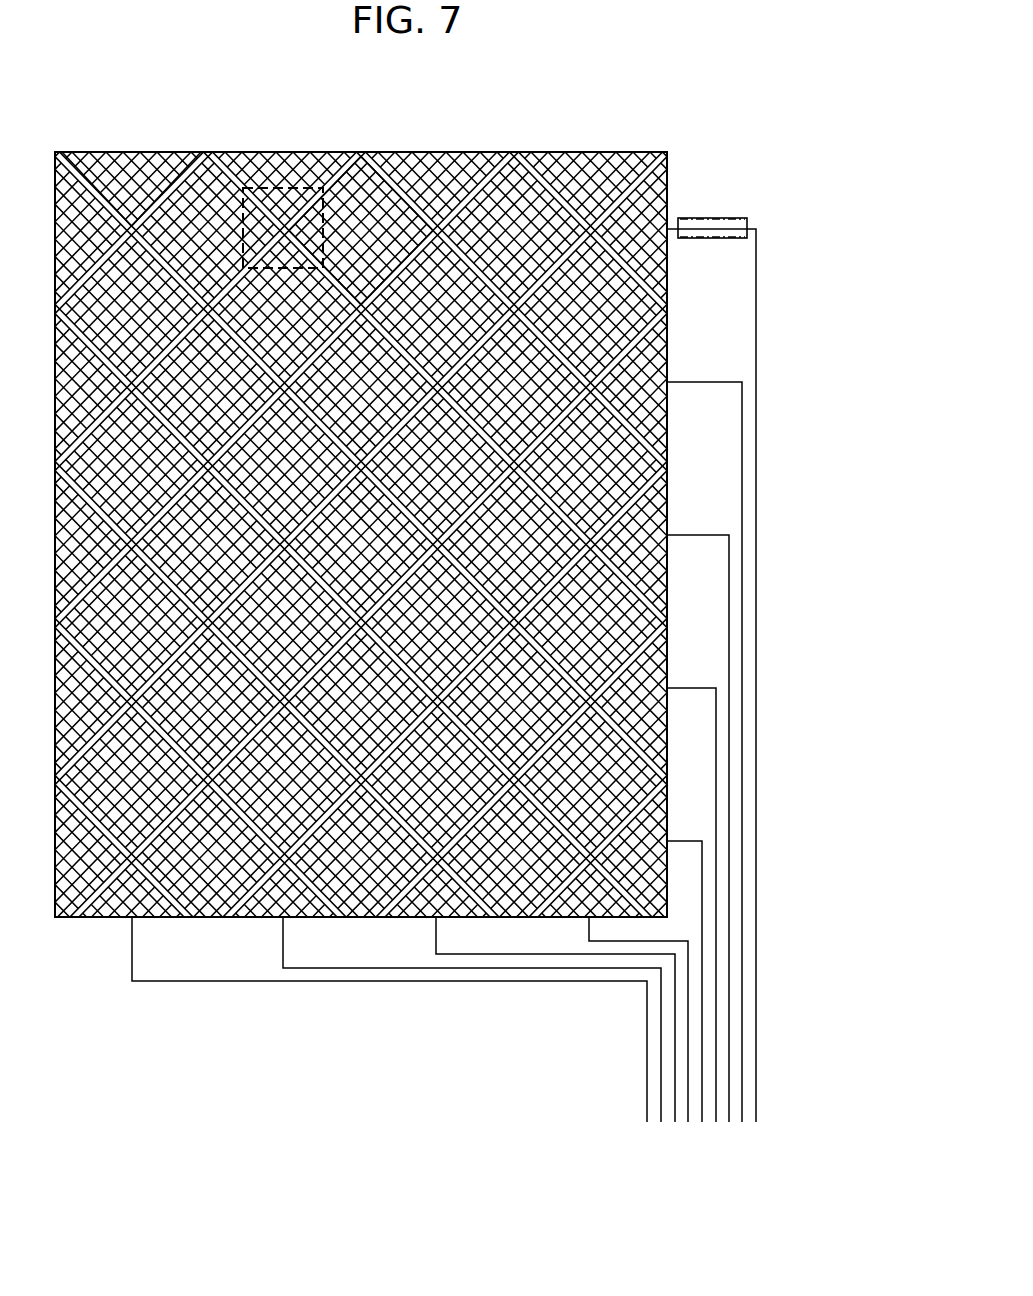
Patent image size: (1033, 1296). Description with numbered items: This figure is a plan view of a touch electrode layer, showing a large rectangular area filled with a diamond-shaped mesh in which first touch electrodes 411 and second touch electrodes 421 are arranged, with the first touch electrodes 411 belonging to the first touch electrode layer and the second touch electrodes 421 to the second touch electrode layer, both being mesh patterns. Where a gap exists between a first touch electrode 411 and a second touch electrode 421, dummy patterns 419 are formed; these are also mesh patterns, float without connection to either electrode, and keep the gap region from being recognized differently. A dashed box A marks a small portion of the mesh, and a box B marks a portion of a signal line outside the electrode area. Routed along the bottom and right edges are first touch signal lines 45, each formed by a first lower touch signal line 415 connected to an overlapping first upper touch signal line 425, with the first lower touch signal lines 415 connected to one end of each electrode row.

The first touch electrode 411 is at (426, 163).
The dummy pattern 419 is at (164, 192).
The second touch electrode 421 is at (362, 175).
The region A is at (289, 190).
The region B is at (727, 218).
The first touch signal line 45 is at (444, 675).
The first lower touch signal line 415 is at (183, 982).
The first upper touch signal line 425 is at (711, 675).